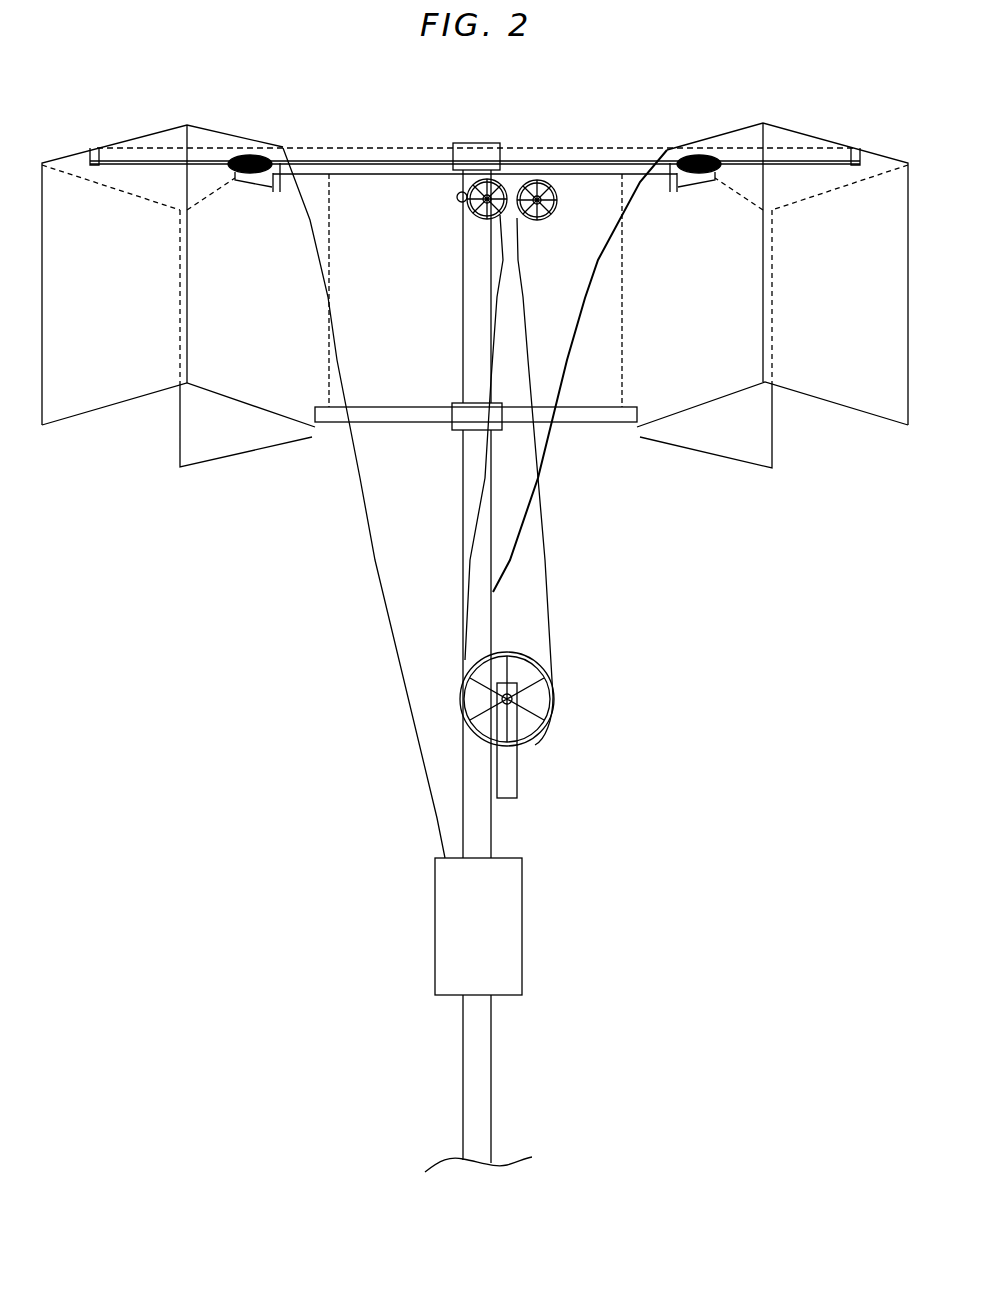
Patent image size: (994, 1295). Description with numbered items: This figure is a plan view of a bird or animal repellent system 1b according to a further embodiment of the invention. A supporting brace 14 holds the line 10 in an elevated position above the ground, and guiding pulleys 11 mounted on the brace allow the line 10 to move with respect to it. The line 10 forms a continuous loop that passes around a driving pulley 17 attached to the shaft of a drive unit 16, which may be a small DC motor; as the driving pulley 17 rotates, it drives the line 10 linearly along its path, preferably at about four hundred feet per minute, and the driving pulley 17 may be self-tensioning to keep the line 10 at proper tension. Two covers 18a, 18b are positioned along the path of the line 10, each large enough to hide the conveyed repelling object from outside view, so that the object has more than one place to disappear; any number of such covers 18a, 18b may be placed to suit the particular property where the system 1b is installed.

The bird or animal repellent system 1b is at (632, 84).
The line 10 is at (550, 593).
The guiding pulleys 11 is at (530, 180).
The supporting brace 14 is at (476, 803).
The drive unit 16 is at (497, 922).
The driving pulley 17 is at (535, 705).
The cover 18a is at (118, 363).
The cover 18b is at (833, 363).